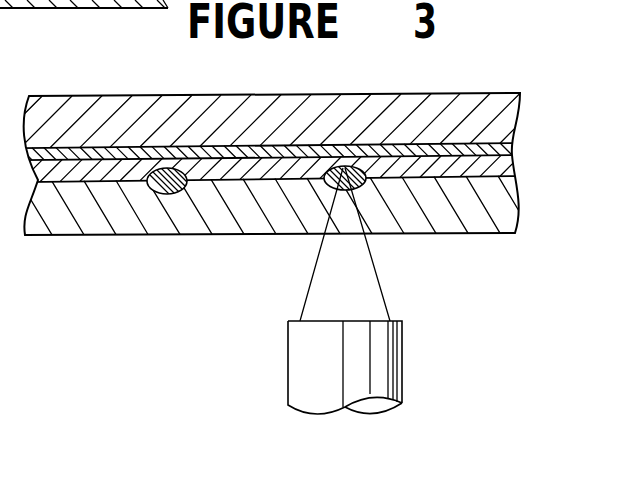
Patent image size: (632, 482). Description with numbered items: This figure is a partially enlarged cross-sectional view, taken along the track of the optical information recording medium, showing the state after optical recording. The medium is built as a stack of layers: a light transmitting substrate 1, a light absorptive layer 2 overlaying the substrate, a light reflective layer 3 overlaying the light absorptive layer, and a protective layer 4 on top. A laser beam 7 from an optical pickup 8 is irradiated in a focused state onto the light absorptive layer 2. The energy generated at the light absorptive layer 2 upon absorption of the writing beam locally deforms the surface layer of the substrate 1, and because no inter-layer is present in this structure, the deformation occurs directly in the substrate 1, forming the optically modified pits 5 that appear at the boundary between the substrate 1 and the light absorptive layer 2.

The light transmitting substrate 1 is at (455, 195).
The light absorptive layer 2 is at (72, 165).
The light reflective layer 3 is at (255, 157).
The protective layer 4 is at (148, 126).
The optically modified pits 5 is at (162, 187).
The laser beam 7 is at (330, 287).
The optical pickup 8 is at (368, 355).